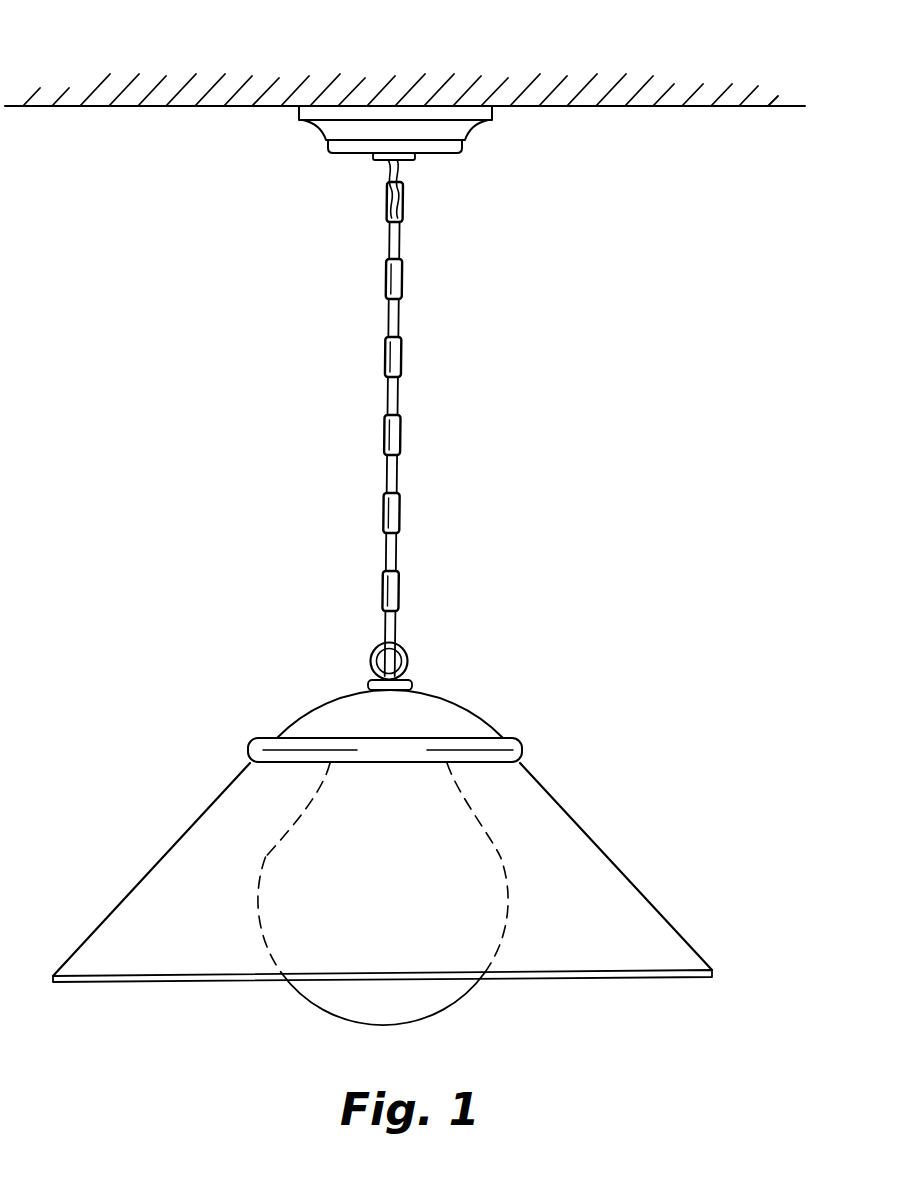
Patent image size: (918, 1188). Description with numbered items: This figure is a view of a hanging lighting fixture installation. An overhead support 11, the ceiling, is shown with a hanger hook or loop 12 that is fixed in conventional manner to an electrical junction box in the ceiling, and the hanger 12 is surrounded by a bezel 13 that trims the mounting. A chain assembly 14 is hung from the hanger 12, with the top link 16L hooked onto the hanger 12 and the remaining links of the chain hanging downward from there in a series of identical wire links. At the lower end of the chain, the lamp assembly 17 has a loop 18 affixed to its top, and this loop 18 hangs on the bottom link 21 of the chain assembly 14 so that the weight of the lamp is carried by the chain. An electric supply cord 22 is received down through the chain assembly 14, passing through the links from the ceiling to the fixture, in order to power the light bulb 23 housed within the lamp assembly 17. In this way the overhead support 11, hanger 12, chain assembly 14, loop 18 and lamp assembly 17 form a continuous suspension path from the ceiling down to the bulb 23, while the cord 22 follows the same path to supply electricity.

The overhead support 11 is at (525, 88).
The bezel 13 is at (466, 129).
The hanger hook or loop 12 is at (404, 170).
The top link 16L is at (404, 208).
The chain assembly 14 is at (449, 418).
The electric supply cord 22 is at (404, 516).
The bottom link 21 is at (402, 628).
The loop 18 is at (409, 663).
The lamp assembly 17 is at (568, 772).
The light bulb 23 is at (507, 860).